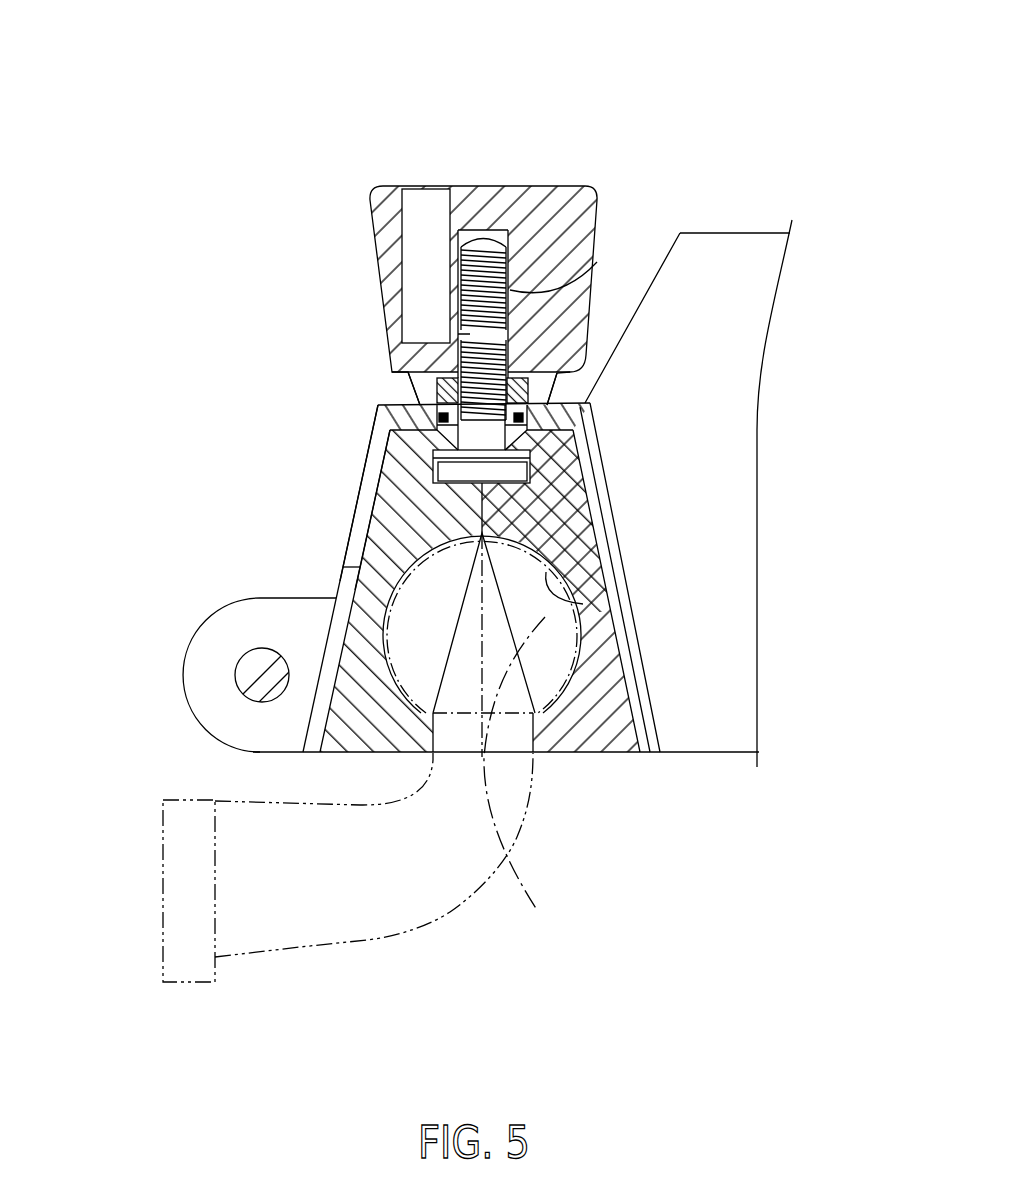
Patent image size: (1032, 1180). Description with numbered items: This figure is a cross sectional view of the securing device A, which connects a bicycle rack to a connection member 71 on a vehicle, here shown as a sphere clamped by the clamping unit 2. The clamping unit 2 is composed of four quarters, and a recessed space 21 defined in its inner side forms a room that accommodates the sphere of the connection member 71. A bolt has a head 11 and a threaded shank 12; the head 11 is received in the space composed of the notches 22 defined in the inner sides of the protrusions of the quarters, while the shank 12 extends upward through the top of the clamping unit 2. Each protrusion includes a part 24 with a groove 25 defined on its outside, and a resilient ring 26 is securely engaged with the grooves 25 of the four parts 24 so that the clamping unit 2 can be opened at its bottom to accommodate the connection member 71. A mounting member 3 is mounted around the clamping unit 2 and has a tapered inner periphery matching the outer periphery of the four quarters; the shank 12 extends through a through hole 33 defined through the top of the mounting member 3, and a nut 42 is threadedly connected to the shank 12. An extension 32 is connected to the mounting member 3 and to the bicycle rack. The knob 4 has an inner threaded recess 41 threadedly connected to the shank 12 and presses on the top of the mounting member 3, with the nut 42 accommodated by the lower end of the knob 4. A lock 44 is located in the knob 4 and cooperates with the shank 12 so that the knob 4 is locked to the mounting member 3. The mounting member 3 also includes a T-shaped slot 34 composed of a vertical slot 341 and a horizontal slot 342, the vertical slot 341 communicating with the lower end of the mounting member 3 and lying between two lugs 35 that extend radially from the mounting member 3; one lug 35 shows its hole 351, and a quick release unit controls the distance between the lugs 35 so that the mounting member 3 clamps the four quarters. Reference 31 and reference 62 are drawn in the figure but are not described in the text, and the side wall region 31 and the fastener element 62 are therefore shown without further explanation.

The securing device A is at (727, 94).
The clamping unit 2 is at (617, 755).
The mounting member 3 is at (652, 675).
The knob 4 is at (565, 188).
The head 11 is at (480, 469).
The shank 12 is at (578, 276).
The recessed space 21 is at (548, 575).
The notch 22 is at (533, 465).
The part 24 is at (583, 408).
The groove 25 is at (522, 420).
The resilient ring 26 is at (518, 417).
The side wall 31 is at (387, 497).
The extension 32 is at (723, 334).
The through hole 33 is at (425, 455).
The T-shaped slot 34 is at (238, 531).
The vertical slot 341 is at (337, 600).
The horizontal slot 342 is at (343, 613).
The lug 35 is at (227, 632).
The hole 351 is at (235, 676).
The inner threaded recess 41 is at (479, 230).
The nut 42 is at (437, 395).
The lock 44 is at (424, 232).
The bolt 62 is at (260, 677).
The connection member 71 is at (365, 799).